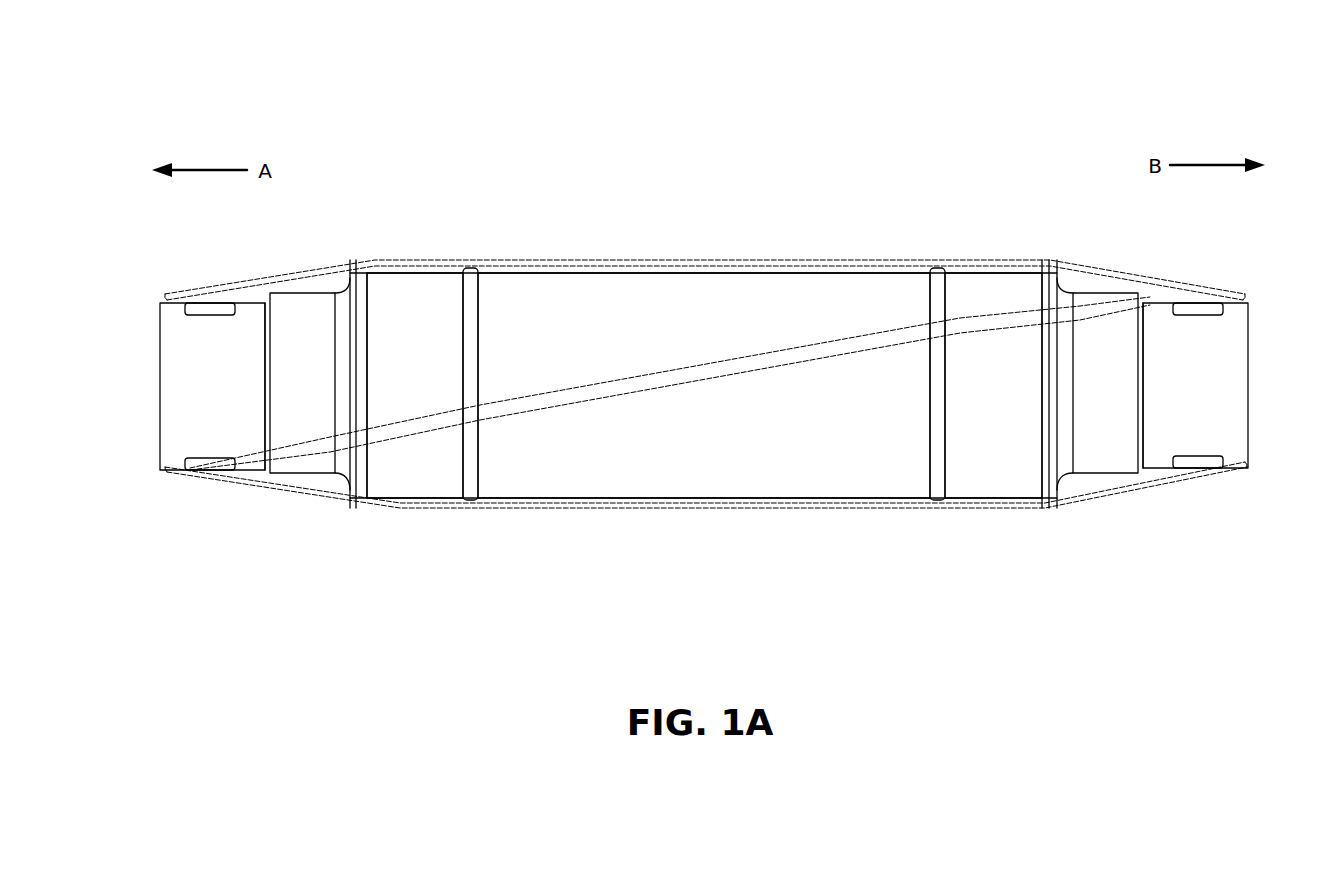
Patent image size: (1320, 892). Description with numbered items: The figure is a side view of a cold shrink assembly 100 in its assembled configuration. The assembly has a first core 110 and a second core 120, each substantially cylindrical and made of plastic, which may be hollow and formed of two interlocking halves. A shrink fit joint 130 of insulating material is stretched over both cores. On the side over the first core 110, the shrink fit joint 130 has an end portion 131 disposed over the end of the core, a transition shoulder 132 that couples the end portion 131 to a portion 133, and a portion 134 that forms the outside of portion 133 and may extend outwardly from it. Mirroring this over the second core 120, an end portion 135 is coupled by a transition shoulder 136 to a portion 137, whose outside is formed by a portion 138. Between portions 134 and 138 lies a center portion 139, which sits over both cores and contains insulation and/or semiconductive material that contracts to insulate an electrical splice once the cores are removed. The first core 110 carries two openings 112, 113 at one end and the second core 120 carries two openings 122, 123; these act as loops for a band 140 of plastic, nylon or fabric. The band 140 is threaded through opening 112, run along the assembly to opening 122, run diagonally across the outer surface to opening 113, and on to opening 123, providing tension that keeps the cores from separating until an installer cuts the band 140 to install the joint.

The cold shrink assembly 100 is at (707, 336).
The first core 110 is at (194, 395).
The opening 112 is at (216, 303).
The opening 113 is at (200, 458).
The second core 120 is at (1217, 368).
The opening 122 is at (1197, 305).
The opening 123 is at (1217, 458).
The shrink fit joint 130 is at (265, 480).
The end portion 131 is at (307, 300).
The transition shoulder 132 is at (357, 292).
The portion 133 is at (410, 292).
The portion 134 is at (471, 275).
The end portion 135 is at (1108, 438).
The transition shoulder 136 is at (1068, 292).
The portion 137 is at (1000, 290).
The portion 138 is at (940, 278).
The center portion 139 is at (697, 480).
The band 140 is at (157, 297).